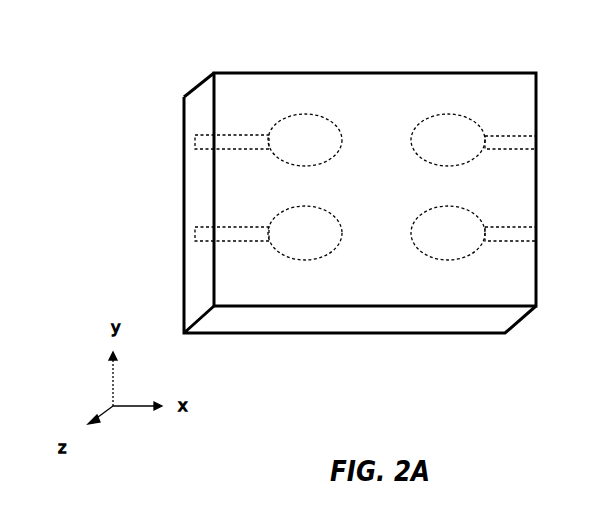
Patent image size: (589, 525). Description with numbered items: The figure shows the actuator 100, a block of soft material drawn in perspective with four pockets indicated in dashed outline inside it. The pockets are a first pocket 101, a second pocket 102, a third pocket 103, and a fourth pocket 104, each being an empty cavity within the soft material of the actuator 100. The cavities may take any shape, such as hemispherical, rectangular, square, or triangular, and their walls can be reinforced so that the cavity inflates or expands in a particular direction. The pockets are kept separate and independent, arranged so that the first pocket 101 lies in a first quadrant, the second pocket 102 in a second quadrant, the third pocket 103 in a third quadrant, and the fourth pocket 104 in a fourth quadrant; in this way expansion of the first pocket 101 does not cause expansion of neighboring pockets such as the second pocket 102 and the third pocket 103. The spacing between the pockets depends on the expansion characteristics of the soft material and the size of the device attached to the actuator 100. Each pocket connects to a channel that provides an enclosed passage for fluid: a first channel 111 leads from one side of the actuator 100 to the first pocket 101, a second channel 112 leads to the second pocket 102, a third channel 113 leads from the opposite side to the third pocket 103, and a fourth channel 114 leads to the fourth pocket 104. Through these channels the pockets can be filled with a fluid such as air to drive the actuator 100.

The actuator 100 is at (505, 71).
The first pocket 101 is at (353, 104).
The second pocket 102 is at (355, 200).
The third pocket 103 is at (422, 127).
The fourth pocket 104 is at (423, 215).
The first channel 111 is at (232, 149).
The second channel 112 is at (243, 241).
The third channel 113 is at (490, 150).
The fourth channel 114 is at (503, 242).